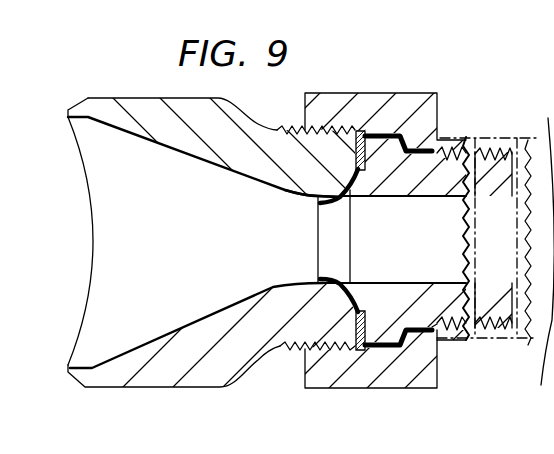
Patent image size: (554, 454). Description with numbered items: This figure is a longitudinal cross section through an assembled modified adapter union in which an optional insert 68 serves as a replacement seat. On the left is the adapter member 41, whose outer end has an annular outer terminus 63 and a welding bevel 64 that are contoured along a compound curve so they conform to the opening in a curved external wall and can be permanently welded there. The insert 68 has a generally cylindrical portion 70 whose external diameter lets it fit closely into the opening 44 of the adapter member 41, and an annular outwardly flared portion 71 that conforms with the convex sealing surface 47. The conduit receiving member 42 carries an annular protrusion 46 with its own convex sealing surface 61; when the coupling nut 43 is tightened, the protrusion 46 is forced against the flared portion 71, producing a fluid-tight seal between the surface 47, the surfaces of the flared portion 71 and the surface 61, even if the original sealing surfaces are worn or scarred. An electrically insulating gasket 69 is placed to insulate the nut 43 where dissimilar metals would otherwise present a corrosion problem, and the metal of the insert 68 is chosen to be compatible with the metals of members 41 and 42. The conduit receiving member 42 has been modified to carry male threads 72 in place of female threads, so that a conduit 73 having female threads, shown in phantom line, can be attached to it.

The adapter member 41 is at (233, 108).
The conduit receiving member 42 is at (491, 310).
The coupling nut 43 is at (379, 102).
The opening 44 is at (318, 220).
The annular protrusion 46 is at (356, 196).
The convex sealing surface 47 is at (327, 282).
The convex sealing surface 61 is at (355, 306).
The annular outer terminus 63 is at (93, 234).
The welding bevel 64 is at (84, 99).
The insert 68 is at (322, 240).
The electrically insulating gasket 69 is at (440, 136).
The cylindrical portion 70 is at (322, 246).
The annular outwardly flared portion 71 is at (350, 282).
The male threads 72 is at (438, 323).
The conduit 73 is at (490, 137).